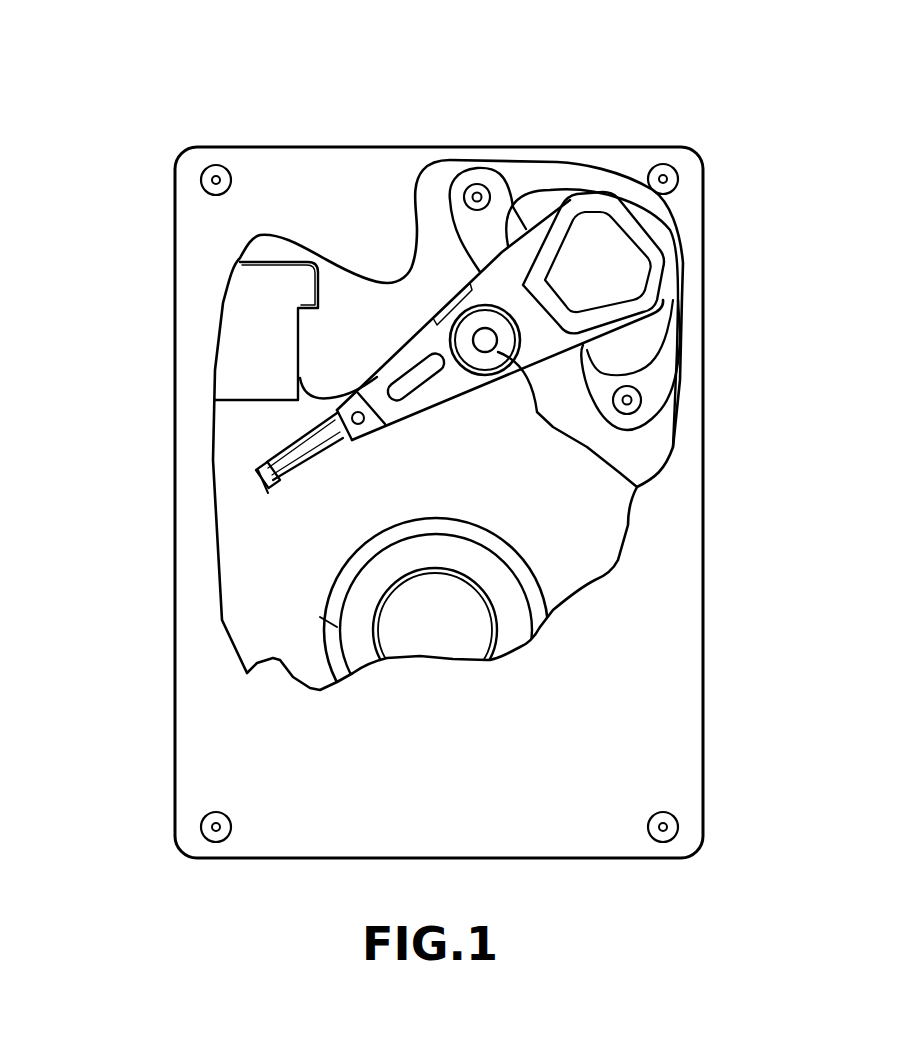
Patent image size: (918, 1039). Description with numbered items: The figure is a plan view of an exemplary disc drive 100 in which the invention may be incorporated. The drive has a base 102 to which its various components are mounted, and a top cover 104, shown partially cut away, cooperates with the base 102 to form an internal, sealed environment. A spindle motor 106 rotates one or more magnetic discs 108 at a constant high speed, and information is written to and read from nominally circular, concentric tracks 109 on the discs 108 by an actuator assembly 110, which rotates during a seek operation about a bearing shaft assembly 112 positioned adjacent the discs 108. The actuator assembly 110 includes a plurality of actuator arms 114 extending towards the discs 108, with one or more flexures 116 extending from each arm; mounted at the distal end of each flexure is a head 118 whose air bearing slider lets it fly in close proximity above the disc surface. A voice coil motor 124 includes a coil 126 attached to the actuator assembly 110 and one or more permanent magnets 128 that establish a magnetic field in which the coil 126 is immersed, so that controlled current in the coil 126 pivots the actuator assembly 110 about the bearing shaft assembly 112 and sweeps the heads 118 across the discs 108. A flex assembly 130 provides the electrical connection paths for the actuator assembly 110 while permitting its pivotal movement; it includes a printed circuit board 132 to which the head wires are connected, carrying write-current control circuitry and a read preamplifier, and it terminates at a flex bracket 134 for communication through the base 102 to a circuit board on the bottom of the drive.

The disc drive 100 is at (205, 101).
The base 102 is at (240, 453).
The top cover 104 is at (220, 718).
The spindle motor 106 is at (437, 633).
The magnetic discs 108 is at (587, 553).
The tracks 109 is at (337, 621).
The actuator assembly 110 is at (465, 398).
The bearing shaft assembly 112 is at (537, 412).
The actuator arms 114 is at (427, 393).
The flexures 116 is at (308, 452).
The head 118 is at (257, 490).
The voice coil motor 124 is at (520, 155).
The coil 126 is at (655, 262).
The permanent magnets 128 is at (516, 222).
The flex assembly 130 is at (420, 345).
The printed circuit board 132 is at (447, 300).
The flex bracket 134 is at (252, 340).